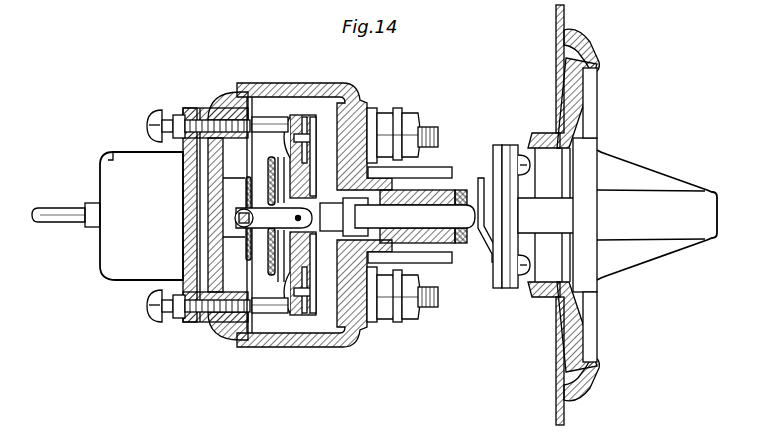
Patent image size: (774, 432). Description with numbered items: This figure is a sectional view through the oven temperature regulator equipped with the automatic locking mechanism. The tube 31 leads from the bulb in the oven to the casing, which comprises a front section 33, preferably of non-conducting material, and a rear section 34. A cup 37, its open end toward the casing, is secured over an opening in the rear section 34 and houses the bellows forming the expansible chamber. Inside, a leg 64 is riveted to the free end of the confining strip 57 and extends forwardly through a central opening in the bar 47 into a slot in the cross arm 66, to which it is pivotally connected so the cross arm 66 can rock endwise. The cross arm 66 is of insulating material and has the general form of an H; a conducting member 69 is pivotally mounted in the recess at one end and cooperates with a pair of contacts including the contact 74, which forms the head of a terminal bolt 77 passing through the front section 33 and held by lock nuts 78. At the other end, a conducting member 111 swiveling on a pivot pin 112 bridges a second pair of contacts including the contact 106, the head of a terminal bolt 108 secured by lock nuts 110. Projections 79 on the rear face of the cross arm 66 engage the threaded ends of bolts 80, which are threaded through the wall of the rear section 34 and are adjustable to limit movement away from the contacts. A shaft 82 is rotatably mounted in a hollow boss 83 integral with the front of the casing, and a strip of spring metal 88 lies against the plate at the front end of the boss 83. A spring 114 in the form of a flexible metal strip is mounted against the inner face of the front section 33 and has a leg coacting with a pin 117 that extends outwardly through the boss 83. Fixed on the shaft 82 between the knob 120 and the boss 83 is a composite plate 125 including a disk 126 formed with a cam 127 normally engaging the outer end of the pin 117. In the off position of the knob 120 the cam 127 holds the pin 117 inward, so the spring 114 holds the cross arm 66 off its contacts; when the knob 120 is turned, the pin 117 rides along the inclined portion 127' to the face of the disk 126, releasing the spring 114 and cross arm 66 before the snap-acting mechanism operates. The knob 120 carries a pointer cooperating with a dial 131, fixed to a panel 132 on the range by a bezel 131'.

The tube 31 is at (47, 223).
The front section 33 is at (336, 90).
The rear section 34 is at (222, 94).
The cup 37 is at (110, 152).
The bar 47 is at (266, 258).
The confining strip 57 is at (192, 250).
The leg 64 is at (258, 176).
The cross arm 66 is at (302, 320).
The conducting member 69 is at (312, 320).
The contact 74 is at (341, 334).
The terminal bolt 77 is at (426, 309).
The lock nuts 78 is at (408, 321).
The projections 79 is at (262, 115).
The bolts 80 is at (156, 110).
The shaft 82 is at (547, 295).
The hollow boss 83 is at (440, 308).
The strip of spring metal 88 is at (447, 264).
The contact 106 is at (352, 94).
The terminal bolt 108 is at (428, 125).
The lock nuts 110 is at (406, 111).
The conducting member 111 is at (313, 114).
The pivot pin 112 is at (298, 113).
The spring 114 is at (360, 324).
The pin 117 is at (432, 210).
The knob 120 is at (643, 176).
The composite plate 125 is at (510, 136).
The disk 126 is at (495, 144).
The cam 127 is at (479, 197).
The inclined portion 127' is at (492, 277).
The dial 131 is at (556, 215).
The bezel 131' is at (604, 214).
The panel 132 is at (556, 412).